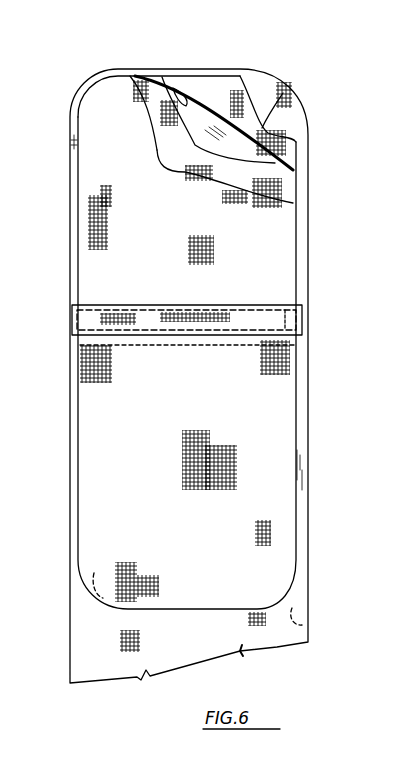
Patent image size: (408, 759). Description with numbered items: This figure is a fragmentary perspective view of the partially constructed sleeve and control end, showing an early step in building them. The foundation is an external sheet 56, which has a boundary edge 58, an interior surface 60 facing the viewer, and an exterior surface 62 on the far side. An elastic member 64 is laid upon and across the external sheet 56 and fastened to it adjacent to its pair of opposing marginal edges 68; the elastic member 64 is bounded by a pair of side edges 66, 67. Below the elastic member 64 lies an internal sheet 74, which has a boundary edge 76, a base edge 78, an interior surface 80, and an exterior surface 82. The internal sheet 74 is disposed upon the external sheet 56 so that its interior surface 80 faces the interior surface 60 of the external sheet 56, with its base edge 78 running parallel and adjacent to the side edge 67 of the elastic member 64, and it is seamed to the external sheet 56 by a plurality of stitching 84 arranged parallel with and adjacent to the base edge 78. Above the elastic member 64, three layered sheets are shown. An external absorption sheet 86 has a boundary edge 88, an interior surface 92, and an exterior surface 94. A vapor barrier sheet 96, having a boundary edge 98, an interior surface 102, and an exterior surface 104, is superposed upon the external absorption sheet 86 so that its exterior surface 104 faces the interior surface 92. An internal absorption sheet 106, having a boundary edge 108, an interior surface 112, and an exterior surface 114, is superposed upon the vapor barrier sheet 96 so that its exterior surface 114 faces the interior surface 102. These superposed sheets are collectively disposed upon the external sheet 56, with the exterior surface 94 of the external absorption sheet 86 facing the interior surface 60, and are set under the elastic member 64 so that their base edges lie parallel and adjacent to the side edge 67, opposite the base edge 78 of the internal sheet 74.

The external sheet 56 is at (302, 226).
The boundary edge 58 is at (308, 202).
The interior surface 60 is at (302, 183).
The exterior surface 62 is at (310, 623).
The elastic member 64 is at (303, 310).
The side edge 66 is at (233, 303).
The side edge 67 is at (280, 336).
The marginal edges 68 is at (72, 318).
The internal sheet 74 is at (283, 432).
The boundary edge 76 is at (297, 528).
The base edge 78 is at (128, 338).
The interior surface 80 is at (103, 600).
The exterior surface 82 is at (93, 513).
The stitching 84 is at (213, 345).
The external absorption sheet 86 is at (218, 87).
The boundary edge 88 is at (244, 68).
The interior surface 92 is at (203, 83).
The exterior surface 94 is at (280, 96).
The vapor barrier sheet 96 is at (157, 80).
The boundary edge 98 is at (173, 88).
The interior surface 102 is at (140, 77).
The exterior surface 104 is at (203, 137).
The internal absorption sheet 106 is at (107, 108).
The boundary edge 108 is at (78, 113).
The interior surface 112 is at (93, 173).
The exterior surface 114 is at (180, 170).